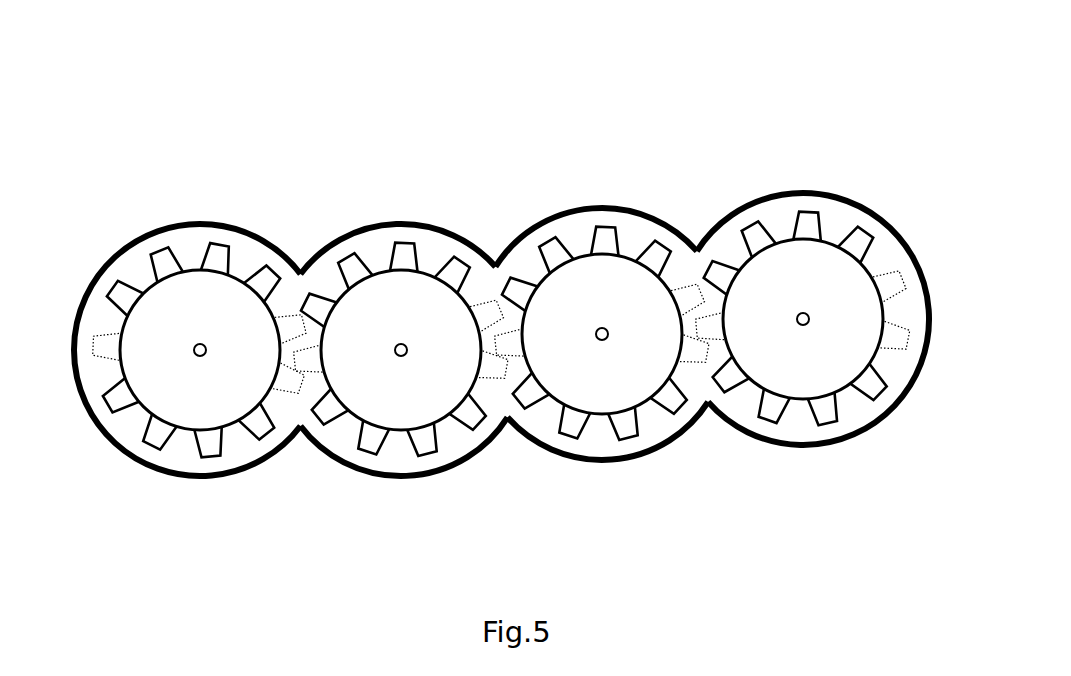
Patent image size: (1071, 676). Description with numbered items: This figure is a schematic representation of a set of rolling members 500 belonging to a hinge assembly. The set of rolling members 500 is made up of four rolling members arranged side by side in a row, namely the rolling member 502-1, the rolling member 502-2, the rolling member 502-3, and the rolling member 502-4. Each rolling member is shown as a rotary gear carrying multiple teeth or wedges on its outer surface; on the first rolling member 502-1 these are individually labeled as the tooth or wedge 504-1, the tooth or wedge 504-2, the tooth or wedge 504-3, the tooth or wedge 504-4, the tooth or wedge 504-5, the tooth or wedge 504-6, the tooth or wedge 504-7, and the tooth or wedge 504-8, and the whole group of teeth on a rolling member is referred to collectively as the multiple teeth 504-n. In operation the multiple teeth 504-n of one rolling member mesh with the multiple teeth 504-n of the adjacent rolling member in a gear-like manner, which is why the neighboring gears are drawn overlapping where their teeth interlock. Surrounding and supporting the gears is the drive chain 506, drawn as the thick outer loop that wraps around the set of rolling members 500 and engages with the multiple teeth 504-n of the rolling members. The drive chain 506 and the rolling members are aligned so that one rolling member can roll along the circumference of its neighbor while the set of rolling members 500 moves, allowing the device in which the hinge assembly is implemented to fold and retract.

The set of rolling members 500 is at (170, 63).
The rolling member 502-1 is at (240, 277).
The rolling member 502-2 is at (428, 277).
The rolling member 502-3 is at (630, 260).
The rolling member 502-4 is at (830, 238).
The tooth or wedge 504-1 is at (215, 252).
The tooth or wedge 504-2 is at (153, 263).
The tooth or wedge 504-3 is at (117, 283).
The tooth or wedge 504-4 is at (108, 357).
The tooth or wedge 504-5 is at (127, 412).
The tooth or wedge 504-6 is at (157, 443).
The tooth or wedge 504-7 is at (212, 455).
The tooth or wedge 504-8 is at (265, 437).
The multiple teeth 504-n is at (268, 270).
The drive chain 506 is at (230, 221).